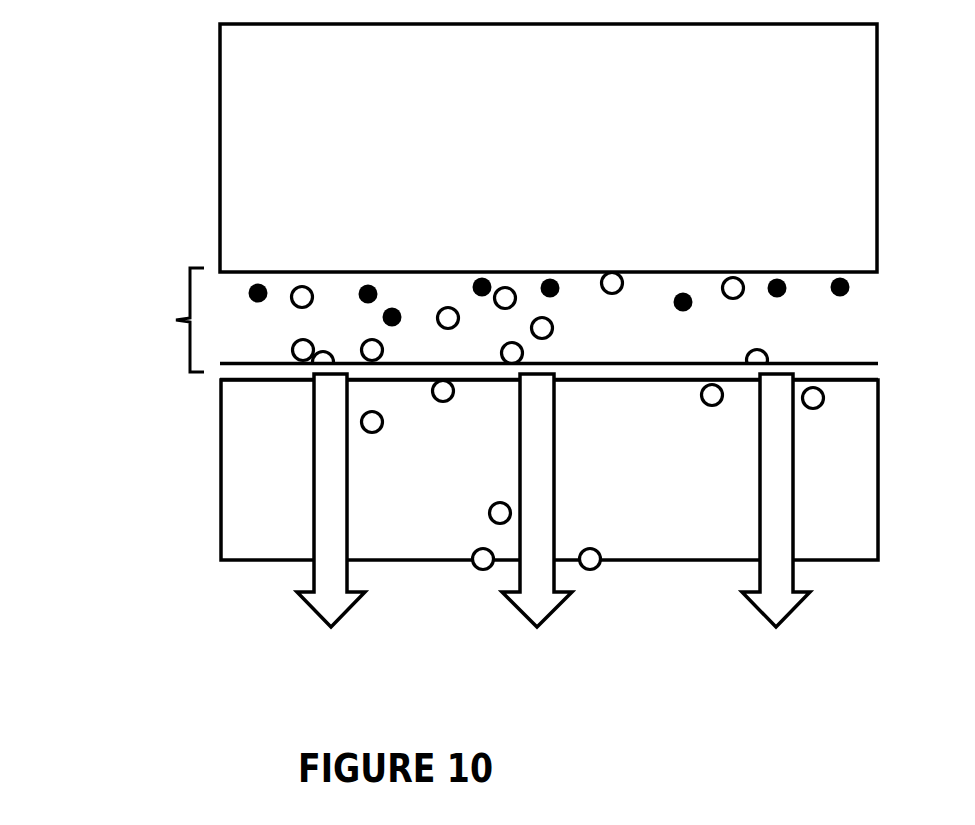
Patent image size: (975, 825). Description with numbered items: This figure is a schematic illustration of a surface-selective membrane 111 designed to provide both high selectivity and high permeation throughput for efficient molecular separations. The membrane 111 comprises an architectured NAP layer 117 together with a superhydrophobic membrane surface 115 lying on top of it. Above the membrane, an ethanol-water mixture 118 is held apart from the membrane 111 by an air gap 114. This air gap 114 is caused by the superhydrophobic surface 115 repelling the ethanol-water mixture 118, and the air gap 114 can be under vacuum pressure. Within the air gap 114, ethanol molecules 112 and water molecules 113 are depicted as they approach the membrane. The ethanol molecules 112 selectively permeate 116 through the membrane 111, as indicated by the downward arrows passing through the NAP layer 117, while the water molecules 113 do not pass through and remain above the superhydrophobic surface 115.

The membrane 111 is at (162, 400).
The ethanol molecules 112 is at (441, 305).
The water molecules 113 is at (358, 280).
The air gap 114 is at (148, 320).
The superhydrophobic membrane surface 115 is at (249, 382).
The permeation 116 is at (325, 522).
The architectured NAP layer 117 is at (249, 475).
The ethanol-water mixture 118 is at (577, 156).